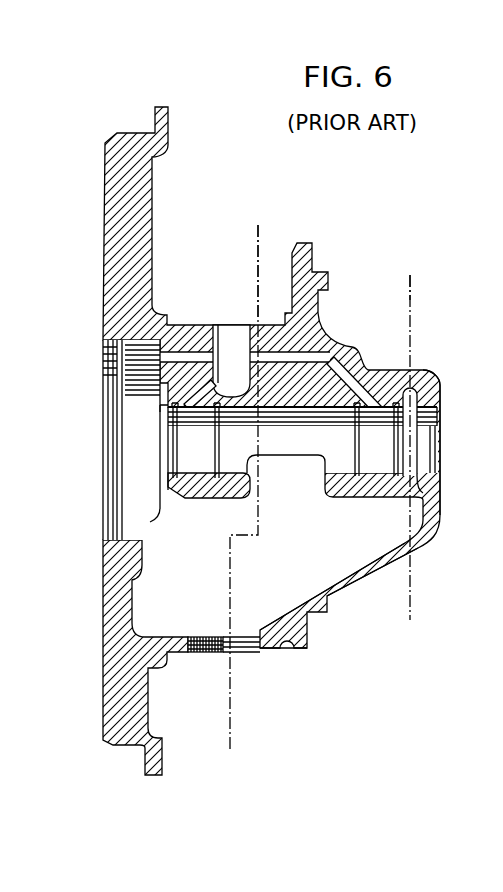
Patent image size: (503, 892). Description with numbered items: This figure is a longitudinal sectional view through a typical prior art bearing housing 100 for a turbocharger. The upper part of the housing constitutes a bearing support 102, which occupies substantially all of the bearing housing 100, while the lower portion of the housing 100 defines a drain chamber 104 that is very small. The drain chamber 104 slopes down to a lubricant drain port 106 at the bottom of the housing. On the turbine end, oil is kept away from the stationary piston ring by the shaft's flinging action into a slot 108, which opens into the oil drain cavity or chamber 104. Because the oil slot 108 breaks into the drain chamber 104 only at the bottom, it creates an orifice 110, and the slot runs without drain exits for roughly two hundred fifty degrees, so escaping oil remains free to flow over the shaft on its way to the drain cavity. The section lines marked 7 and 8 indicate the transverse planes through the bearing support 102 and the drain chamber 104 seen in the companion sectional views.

The bearing housing 100 is at (353, 252).
The bearing support 102 is at (353, 490).
The drain chamber 104 is at (278, 562).
The lubricant drain port 106 is at (212, 633).
The slot 108 is at (437, 383).
The orifice 110 is at (408, 478).
The section line 7- 7 is at (275, 260).
The section line 8- 8 is at (430, 323).